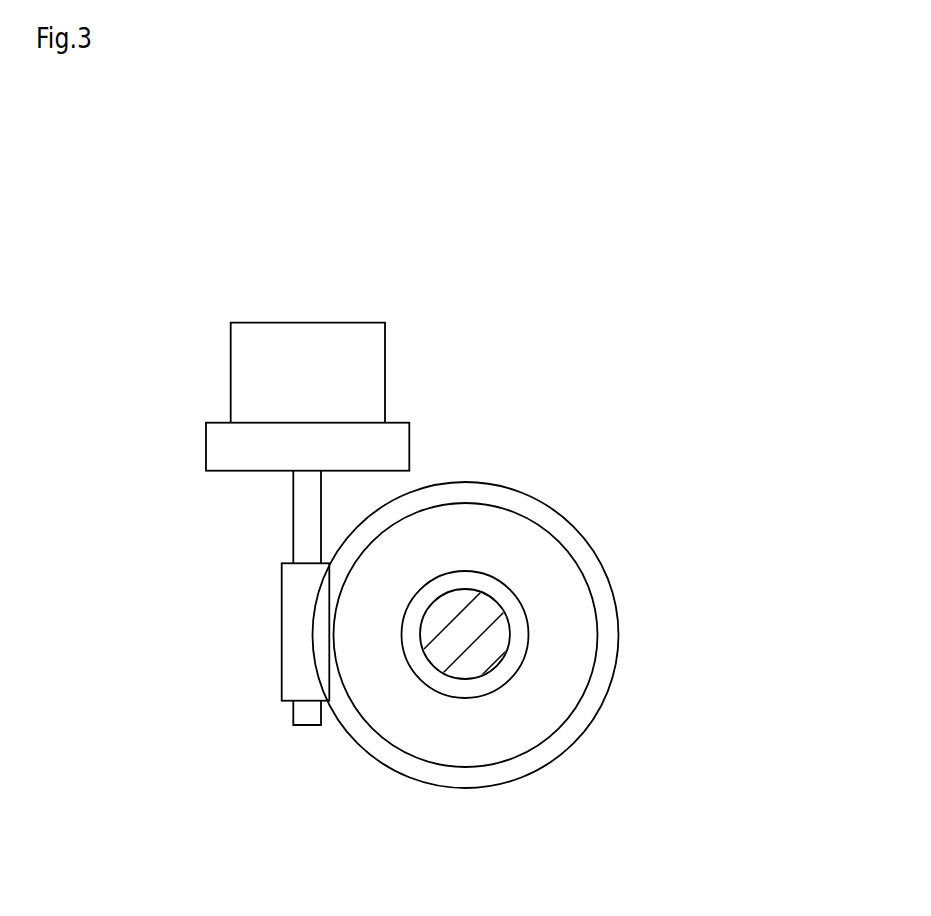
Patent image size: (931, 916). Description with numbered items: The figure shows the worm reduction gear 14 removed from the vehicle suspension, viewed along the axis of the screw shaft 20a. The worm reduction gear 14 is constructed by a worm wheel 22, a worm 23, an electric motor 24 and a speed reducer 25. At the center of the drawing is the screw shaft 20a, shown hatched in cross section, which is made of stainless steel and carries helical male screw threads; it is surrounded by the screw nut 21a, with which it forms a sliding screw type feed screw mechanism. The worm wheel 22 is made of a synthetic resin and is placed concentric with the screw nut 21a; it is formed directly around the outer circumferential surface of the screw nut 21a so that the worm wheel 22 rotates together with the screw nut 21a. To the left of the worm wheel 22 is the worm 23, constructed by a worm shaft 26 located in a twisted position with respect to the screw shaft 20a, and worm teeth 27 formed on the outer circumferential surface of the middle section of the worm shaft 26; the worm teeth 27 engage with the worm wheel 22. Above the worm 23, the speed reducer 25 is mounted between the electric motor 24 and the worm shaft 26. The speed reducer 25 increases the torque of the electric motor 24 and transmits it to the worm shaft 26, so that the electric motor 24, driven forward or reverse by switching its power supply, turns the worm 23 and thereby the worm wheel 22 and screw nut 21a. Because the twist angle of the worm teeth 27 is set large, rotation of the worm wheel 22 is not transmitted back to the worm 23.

The worm reduction gear 14 is at (217, 338).
The electric motor 24 is at (342, 328).
The speed reducer 25 is at (207, 445).
The worm shaft 26 is at (307, 517).
The worm 23 is at (292, 642).
The worm teeth 27 is at (298, 672).
The worm wheel 22 is at (585, 565).
The screw nut 21a is at (502, 673).
The screw shaft 20a is at (462, 665).